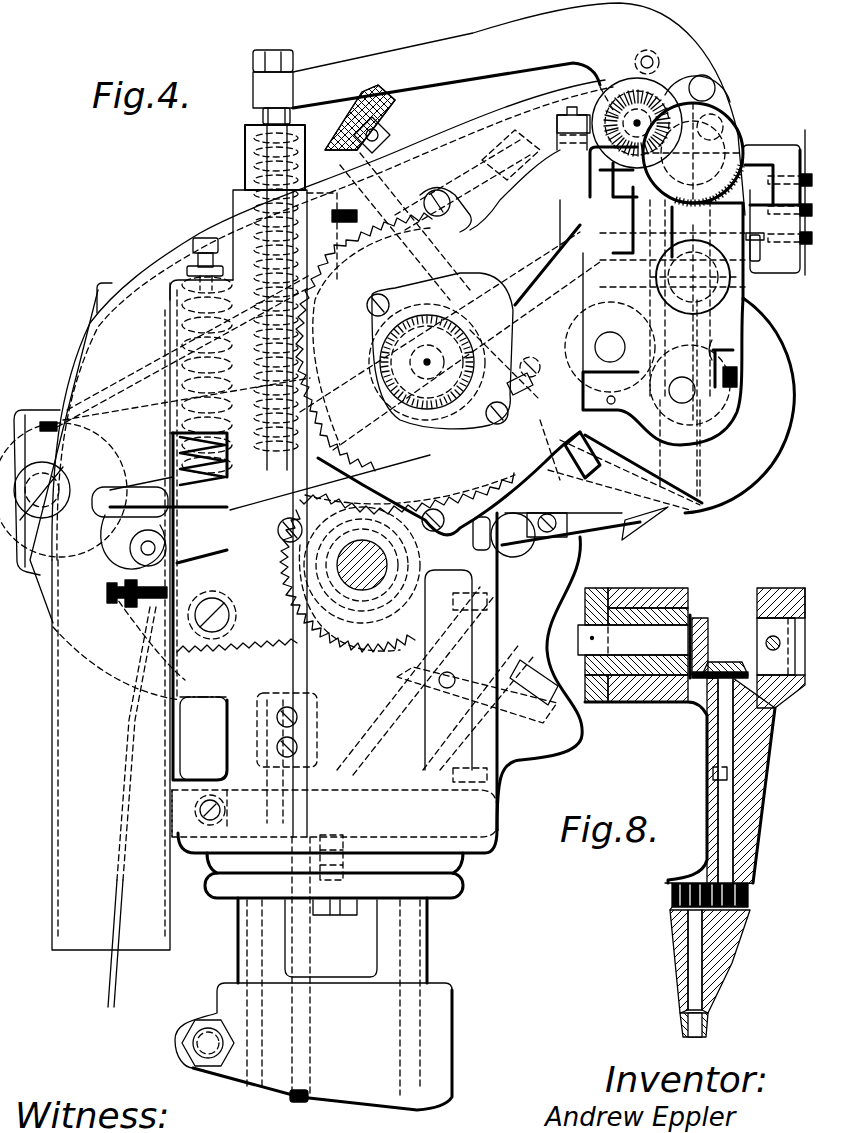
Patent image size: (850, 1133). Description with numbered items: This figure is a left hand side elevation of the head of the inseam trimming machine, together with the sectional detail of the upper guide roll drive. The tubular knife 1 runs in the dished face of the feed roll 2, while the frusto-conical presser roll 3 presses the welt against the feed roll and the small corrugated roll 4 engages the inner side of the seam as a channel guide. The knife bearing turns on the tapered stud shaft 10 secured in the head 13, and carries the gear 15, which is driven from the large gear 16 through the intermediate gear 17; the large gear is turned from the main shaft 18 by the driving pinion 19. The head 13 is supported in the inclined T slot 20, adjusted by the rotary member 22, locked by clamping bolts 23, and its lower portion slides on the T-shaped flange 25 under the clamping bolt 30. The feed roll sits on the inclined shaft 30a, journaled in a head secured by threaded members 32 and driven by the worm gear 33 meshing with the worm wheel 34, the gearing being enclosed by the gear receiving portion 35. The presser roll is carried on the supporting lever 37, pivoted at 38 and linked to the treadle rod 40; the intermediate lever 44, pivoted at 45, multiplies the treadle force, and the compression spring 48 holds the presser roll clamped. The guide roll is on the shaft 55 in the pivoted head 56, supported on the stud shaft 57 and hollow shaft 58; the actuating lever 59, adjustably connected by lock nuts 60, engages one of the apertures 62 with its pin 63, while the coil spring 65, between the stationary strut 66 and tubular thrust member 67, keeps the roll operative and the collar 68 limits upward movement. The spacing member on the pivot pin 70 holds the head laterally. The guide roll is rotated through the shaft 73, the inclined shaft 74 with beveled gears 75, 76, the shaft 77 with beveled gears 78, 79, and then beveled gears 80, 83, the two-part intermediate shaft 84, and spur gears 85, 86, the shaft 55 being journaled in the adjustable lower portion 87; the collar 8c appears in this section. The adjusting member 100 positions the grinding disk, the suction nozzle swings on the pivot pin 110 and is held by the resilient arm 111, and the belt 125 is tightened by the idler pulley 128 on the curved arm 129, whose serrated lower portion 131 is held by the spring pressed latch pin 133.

In FIG. 4, the tubular knife 1 is at (752, 462).
In FIG. 4, the feed roll 2 is at (660, 520).
In FIG. 4, the presser roll 3 is at (645, 528).
In FIG. 4, the corrugated roll 4 is at (700, 502).
In FIG. 8, the corrugated roll 4 is at (710, 1022).
In FIG. 4, the stud shaft 10 is at (590, 470).
In FIG. 4, the head 13 is at (733, 350).
In FIG. 4, the gear 15 is at (713, 397).
In FIG. 4, the large gear 16 is at (372, 240).
In FIG. 4, the intermediate gear 17 is at (604, 408).
In FIG. 4, the main shaft 18 is at (360, 588).
In FIG. 4, the driving pinion 19 is at (372, 648).
In FIG. 4, the inclined T slot 20 is at (757, 163).
In FIG. 4, the rotary member 22 is at (640, 340).
In FIG. 4, the clamping bolts 23 is at (805, 130).
In FIG. 4, the T-shaped flange 25 is at (705, 230).
In FIG. 4, the clamping bolt 30 is at (760, 262).
In FIG. 4, the inclined shaft 30a is at (395, 718).
In FIG. 4, the threaded members 32 is at (490, 600).
In FIG. 4, the worm gear 33 is at (345, 530).
In FIG. 4, the worm wheel 34 is at (560, 742).
In FIG. 4, the gear receiving portion 35 is at (540, 760).
In FIG. 4, the supporting lever 37 is at (137, 485).
In FIG. 4, the pivot 38 is at (545, 565).
In FIG. 4, the treadle rod 40 is at (278, 792).
In FIG. 4, the intermediate lever 44 is at (212, 552).
In FIG. 4, the pivot 45 is at (148, 548).
In FIG. 4, the compression spring 48 is at (185, 318).
In FIG. 4, the shaft 55 is at (693, 478).
In FIG. 8, the shaft 55 is at (690, 965).
In FIG. 8, the head 56 is at (750, 830).
In FIG. 8, the stud shaft 57 is at (665, 592).
In FIG. 8, the hollow shaft 58 is at (785, 592).
In FIG. 4, the actuating lever 59 is at (370, 66).
In FIG. 8, the actuating lever 59 is at (612, 592).
In FIG. 4, the lock nuts 60 is at (258, 52).
In FIG. 4, the apertures 62 is at (723, 126).
In FIG. 4, the pin 63 is at (716, 92).
In FIG. 4, the coil spring 65 is at (248, 196).
In FIG. 4, the stationary strut 66 is at (262, 400).
In FIG. 4, the tubular thrust member 67 is at (247, 157).
In FIG. 4, the collar 68 is at (262, 445).
In FIG. 4, the pivot pin 70 is at (648, 50).
In FIG. 4, the shaft 73 is at (622, 82).
In FIG. 4, the inclined shaft 74 is at (560, 188).
In FIG. 4, the beveled gear 75 is at (600, 82).
In FIG. 4, the beveled gear 76 is at (560, 128).
In FIG. 4, the shaft 77 is at (392, 370).
In FIG. 4, the beveled gear 78 is at (420, 270).
In FIG. 4, the beveled gear 79 is at (395, 356).
In FIG. 8, the beveled gear 80 is at (712, 612).
In FIG. 4, the beveled gear 83 is at (693, 154).
In FIG. 8, the intermediate shaft 84 is at (718, 733).
In FIG. 8, the spur gear 85 is at (752, 895).
In FIG. 8, the spur gear 86 is at (668, 900).
In FIG. 4, the lower portion 87 is at (695, 462).
In FIG. 8, the lower portion 87 is at (722, 963).
In FIG. 8, the collar 8c is at (718, 662).
In FIG. 4, the adjusting member 100 is at (388, 105).
In FIG. 4, the pivot pin 110 is at (505, 155).
In FIG. 4, the resilient arm 111 is at (515, 380).
In FIG. 4, the belt 125 is at (57, 406).
In FIG. 4, the idler pulley 128 is at (60, 427).
In FIG. 4, the curved arm 129 is at (48, 590).
In FIG. 4, the serrated lower portion 131 is at (210, 640).
In FIG. 4, the spring pressed latch pin 133 is at (203, 738).